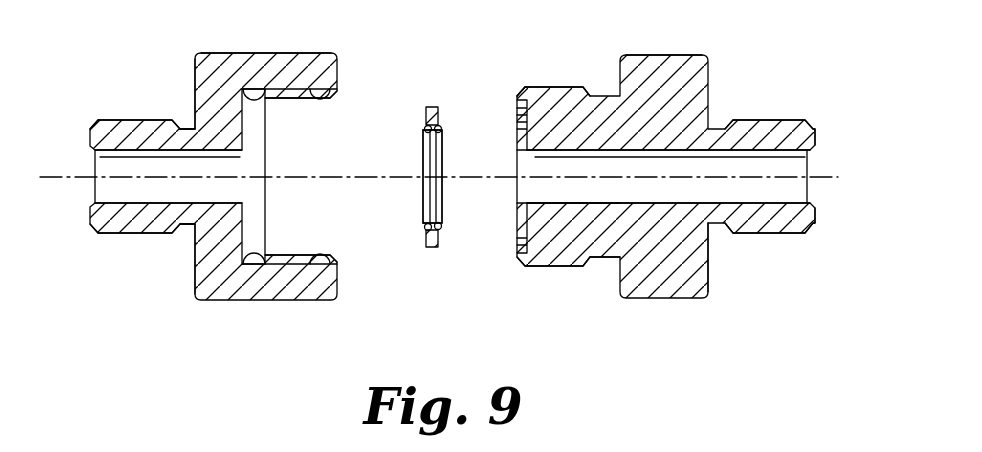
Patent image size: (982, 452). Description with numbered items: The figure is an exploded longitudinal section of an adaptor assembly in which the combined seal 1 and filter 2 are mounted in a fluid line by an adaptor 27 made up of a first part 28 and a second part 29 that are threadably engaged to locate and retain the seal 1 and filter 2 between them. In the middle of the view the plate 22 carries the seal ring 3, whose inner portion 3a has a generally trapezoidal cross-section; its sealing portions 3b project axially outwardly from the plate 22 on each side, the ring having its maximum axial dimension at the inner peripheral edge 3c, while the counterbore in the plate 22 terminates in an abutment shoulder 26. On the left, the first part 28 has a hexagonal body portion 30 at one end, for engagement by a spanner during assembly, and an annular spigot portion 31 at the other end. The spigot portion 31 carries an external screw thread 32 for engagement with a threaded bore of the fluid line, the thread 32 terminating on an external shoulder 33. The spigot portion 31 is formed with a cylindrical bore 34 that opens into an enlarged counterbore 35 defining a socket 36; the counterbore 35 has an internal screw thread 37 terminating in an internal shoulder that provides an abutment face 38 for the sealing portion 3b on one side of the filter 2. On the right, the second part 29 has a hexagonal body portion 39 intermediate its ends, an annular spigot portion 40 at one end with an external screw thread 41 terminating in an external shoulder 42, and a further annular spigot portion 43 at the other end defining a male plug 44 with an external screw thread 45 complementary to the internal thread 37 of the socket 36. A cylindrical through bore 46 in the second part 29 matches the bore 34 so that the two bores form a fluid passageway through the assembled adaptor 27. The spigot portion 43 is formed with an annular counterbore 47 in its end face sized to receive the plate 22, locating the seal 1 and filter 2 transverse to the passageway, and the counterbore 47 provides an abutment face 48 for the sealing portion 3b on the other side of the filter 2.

The seal 1 is at (422, 230).
The filter 2 is at (442, 203).
The seal ring 3 is at (444, 175).
The inner portion 3a is at (416, 138).
The sealing portions 3b is at (424, 129).
The inner peripheral edge 3c is at (443, 145).
The plate 22 is at (428, 107).
The abutment shoulder 26 is at (442, 127).
The adaptor 27 is at (526, 61).
The first part 28 is at (203, 306).
The second part 29 is at (682, 299).
The hexagonal body portion 30 is at (240, 72).
The annular spigot portion 31 is at (124, 215).
The external screw thread 32 is at (129, 126).
The external shoulder 33 is at (197, 263).
The cylindrical bore 34 is at (132, 207).
The counterbore 35 is at (338, 86).
The socket 36 is at (312, 228).
The internal screw thread 37 is at (293, 258).
The abutment face 38 is at (244, 100).
The hexagonal body portion 39 is at (676, 54).
The annular spigot portion 40 is at (795, 213).
The external screw thread 41 is at (786, 126).
The external shoulder 42 is at (710, 271).
The annular spigot portion 43 is at (567, 232).
The male plug 44 is at (558, 112).
The external screw thread 45 is at (542, 262).
The cylindrical through bore 46 is at (775, 203).
The annular counterbore 47 is at (517, 118).
The abutment face 48 is at (525, 236).